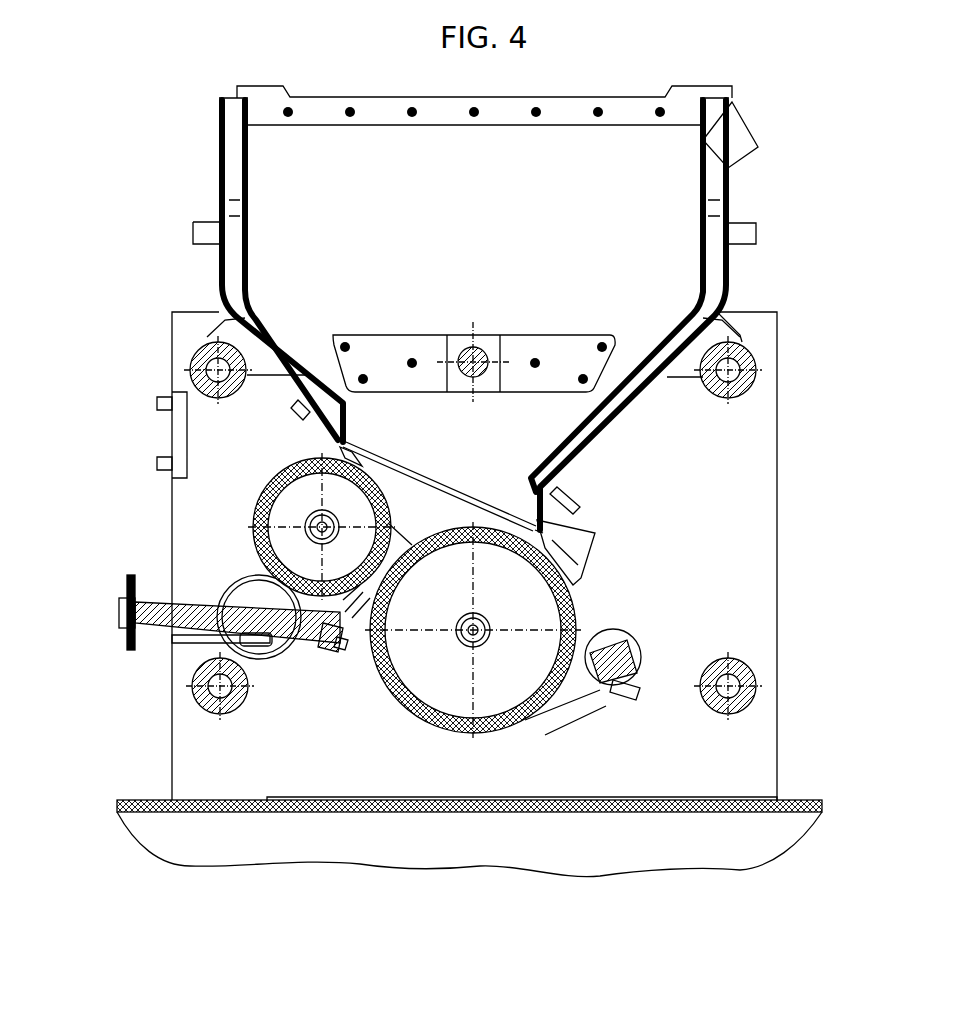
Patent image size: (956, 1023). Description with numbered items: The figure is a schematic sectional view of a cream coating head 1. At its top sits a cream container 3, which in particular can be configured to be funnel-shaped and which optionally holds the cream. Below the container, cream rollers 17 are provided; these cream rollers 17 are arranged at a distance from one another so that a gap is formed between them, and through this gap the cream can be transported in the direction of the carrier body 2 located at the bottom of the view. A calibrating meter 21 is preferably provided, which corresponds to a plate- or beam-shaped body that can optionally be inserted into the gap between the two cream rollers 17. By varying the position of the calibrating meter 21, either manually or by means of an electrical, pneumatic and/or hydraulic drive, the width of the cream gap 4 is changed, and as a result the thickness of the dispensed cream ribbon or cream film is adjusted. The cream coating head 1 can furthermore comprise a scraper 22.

The cream coating head 1 is at (449, 912).
The carrier body 2 is at (378, 796).
The cream container 3 is at (713, 127).
The cream gap 4 is at (363, 597).
The cream rollers 17 is at (270, 573).
The calibrating meter 21 is at (320, 643).
The scraper 22 is at (580, 690).